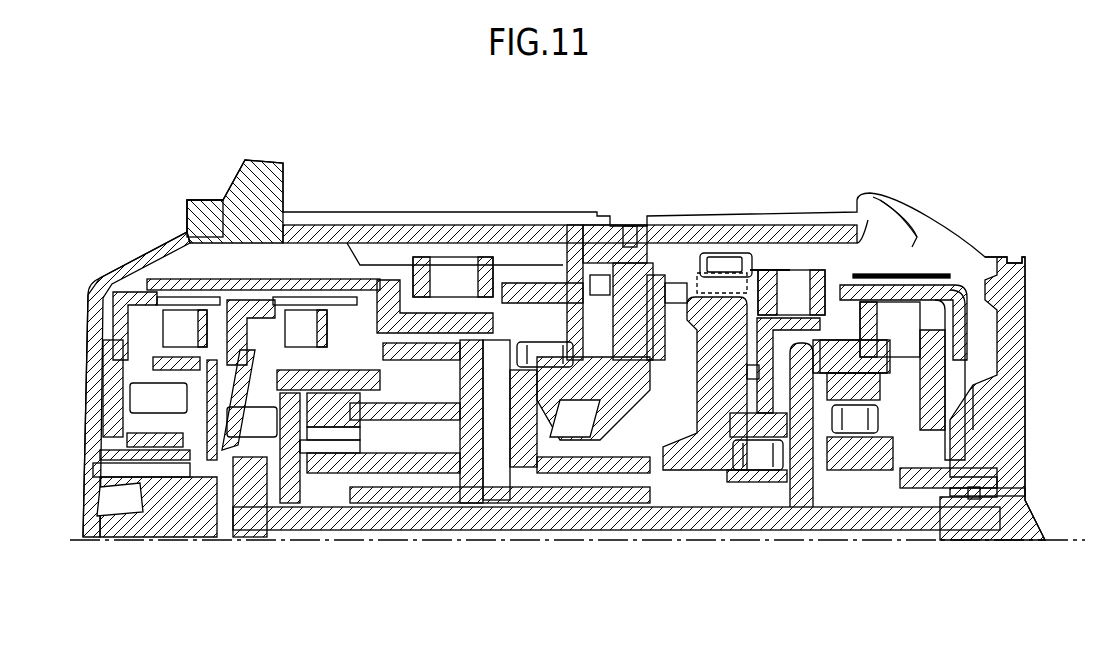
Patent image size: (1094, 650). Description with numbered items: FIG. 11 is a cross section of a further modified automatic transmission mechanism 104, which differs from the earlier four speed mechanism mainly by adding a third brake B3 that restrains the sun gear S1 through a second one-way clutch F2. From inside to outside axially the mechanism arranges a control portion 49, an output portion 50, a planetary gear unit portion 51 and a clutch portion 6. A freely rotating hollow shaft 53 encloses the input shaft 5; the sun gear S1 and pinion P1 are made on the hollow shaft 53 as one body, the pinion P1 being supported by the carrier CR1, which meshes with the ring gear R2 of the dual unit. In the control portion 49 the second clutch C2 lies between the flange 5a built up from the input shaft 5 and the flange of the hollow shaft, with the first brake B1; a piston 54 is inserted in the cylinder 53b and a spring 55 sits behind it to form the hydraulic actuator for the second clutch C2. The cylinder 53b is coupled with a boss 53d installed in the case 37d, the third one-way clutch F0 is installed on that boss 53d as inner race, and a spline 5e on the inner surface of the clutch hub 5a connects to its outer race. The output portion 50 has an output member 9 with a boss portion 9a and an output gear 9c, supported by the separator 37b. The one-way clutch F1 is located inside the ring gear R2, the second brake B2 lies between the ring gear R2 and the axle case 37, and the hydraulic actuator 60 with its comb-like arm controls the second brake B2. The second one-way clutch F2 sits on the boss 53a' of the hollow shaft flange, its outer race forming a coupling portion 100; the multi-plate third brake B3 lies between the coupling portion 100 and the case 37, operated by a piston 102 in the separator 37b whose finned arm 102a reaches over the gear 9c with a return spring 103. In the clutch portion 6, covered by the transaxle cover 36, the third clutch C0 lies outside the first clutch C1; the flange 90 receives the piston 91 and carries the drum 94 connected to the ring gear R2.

The automatic transmission mechanism 104 is at (145, 132).
The clutch portion 6 is at (185, 198).
The drum 94 is at (198, 283).
The transaxle cover 36 is at (108, 268).
The piston 91 is at (125, 338).
The flange 90 is at (108, 367).
The planetary gear unit portion 51 is at (443, 210).
The ring gear R2 is at (403, 330).
The hydraulic actuator 60 is at (530, 287).
The axle case 37 is at (553, 240).
The output portion 50 is at (622, 195).
The separator 37b is at (655, 230).
The piston 102 is at (677, 343).
The return spring 103 is at (720, 260).
The output gear 9c is at (723, 337).
The arm 102a is at (753, 277).
The control portion 49 is at (848, 220).
The flange 5a is at (870, 350).
The first brake B1 is at (940, 272).
The cylinder 53b is at (960, 347).
The piston 54 is at (940, 375).
The spline 5e is at (977, 413).
The spring 55 is at (963, 447).
The case 37d is at (975, 467).
The boss 53d is at (863, 447).
The input shaft 5 is at (840, 527).
The boss 53a' is at (770, 459).
The output member 9 is at (687, 453).
The coupling portion 100 is at (755, 378).
The boss portion 9a is at (593, 460).
The hollow shaft 53 is at (545, 497).
The carrier CR1 is at (450, 490).
The sun gear S1 is at (392, 495).
The pinion P1 is at (347, 457).
The third clutch C0 is at (175, 355).
The first clutch C1 is at (301, 417).
The second clutch C2 is at (893, 342).
The second brake B2 is at (453, 277).
The third brake B3 is at (791, 341).
The third one-way clutch F0 is at (855, 419).
The one-way clutch F1 is at (545, 355).
The second one-way clutch F2 is at (758, 441).